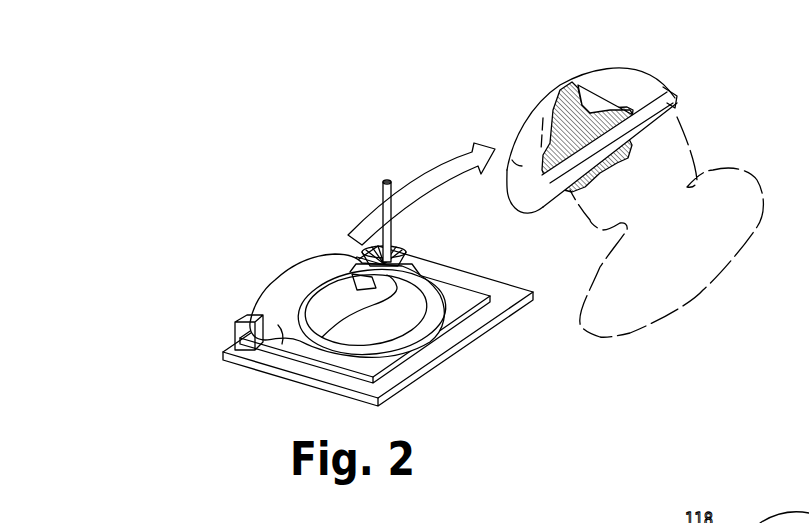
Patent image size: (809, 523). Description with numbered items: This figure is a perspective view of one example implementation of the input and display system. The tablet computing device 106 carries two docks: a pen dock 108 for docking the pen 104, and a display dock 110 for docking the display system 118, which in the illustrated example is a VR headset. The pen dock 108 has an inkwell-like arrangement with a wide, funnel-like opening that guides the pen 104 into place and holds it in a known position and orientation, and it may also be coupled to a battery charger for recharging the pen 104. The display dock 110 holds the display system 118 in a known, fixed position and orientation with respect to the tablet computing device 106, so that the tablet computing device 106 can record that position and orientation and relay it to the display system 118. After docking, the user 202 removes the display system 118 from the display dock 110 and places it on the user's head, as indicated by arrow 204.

The pen 104 is at (382, 187).
The tablet computing device 106 is at (383, 403).
The pen dock 108 is at (400, 250).
The display dock 110 is at (232, 320).
The display system 118 is at (274, 350).
The user 202 is at (687, 128).
The arrow 204 is at (444, 166).